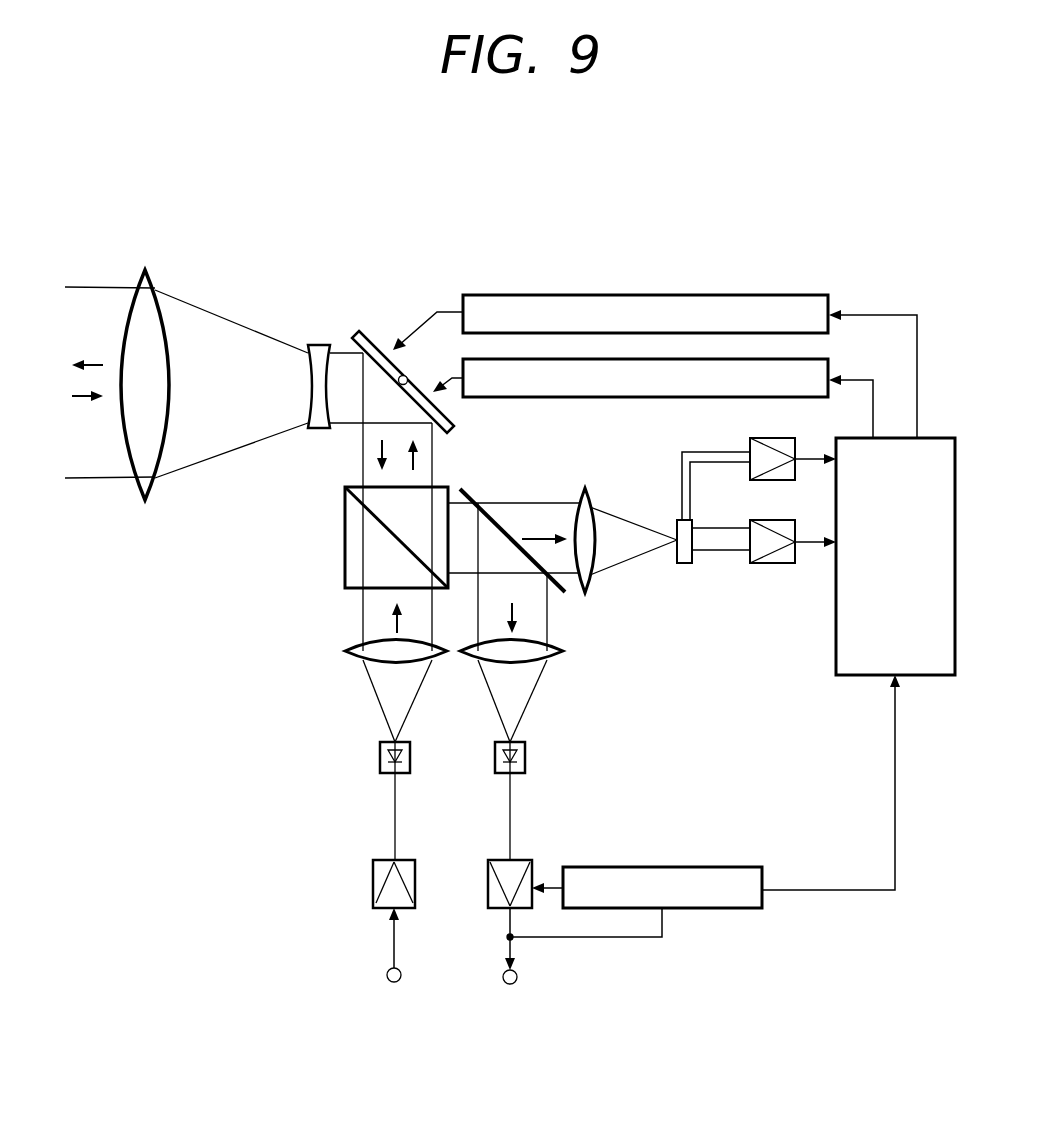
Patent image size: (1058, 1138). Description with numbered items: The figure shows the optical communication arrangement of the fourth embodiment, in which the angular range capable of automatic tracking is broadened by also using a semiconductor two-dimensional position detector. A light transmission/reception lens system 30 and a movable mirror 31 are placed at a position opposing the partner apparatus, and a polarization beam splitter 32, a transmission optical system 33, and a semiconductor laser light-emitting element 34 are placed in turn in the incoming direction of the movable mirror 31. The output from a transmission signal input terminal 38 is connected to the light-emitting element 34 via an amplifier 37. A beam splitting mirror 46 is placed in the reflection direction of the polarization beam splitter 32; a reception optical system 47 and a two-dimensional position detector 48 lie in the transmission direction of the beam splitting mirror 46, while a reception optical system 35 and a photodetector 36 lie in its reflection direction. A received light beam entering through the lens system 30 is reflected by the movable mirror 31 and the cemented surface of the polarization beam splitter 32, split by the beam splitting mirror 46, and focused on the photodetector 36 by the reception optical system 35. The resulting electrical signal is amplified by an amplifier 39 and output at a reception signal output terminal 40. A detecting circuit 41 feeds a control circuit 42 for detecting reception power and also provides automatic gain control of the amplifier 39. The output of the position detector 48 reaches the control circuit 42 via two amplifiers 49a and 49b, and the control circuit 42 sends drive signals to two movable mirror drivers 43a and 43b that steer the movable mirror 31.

The light transmission/reception lens system 30 is at (150, 292).
The movable mirror 31 is at (370, 345).
The polarization beam splitter 32 is at (345, 512).
The transmission optical system 33 is at (345, 651).
The semiconductor laser light-emitting element 34 is at (380, 757).
The reception optical system 35 is at (563, 651).
The photodetector 36 is at (525, 757).
The amplifier 37 is at (373, 872).
The transmission signal input terminal 38 is at (387, 975).
The amplifier 39 is at (490, 858).
The reception signal output terminal 40 is at (517, 975).
The detecting circuit 41 is at (707, 911).
The control circuit 42 is at (929, 438).
The movable mirror driver 43a is at (810, 318).
The movable mirror driver 43b is at (531, 398).
The beam splitting mirror 46 is at (477, 498).
The reception optical system 47 is at (586, 490).
The two-dimensional position detector 48 is at (684, 565).
The amplifier 49a is at (795, 442).
The amplifier 49b is at (795, 524).